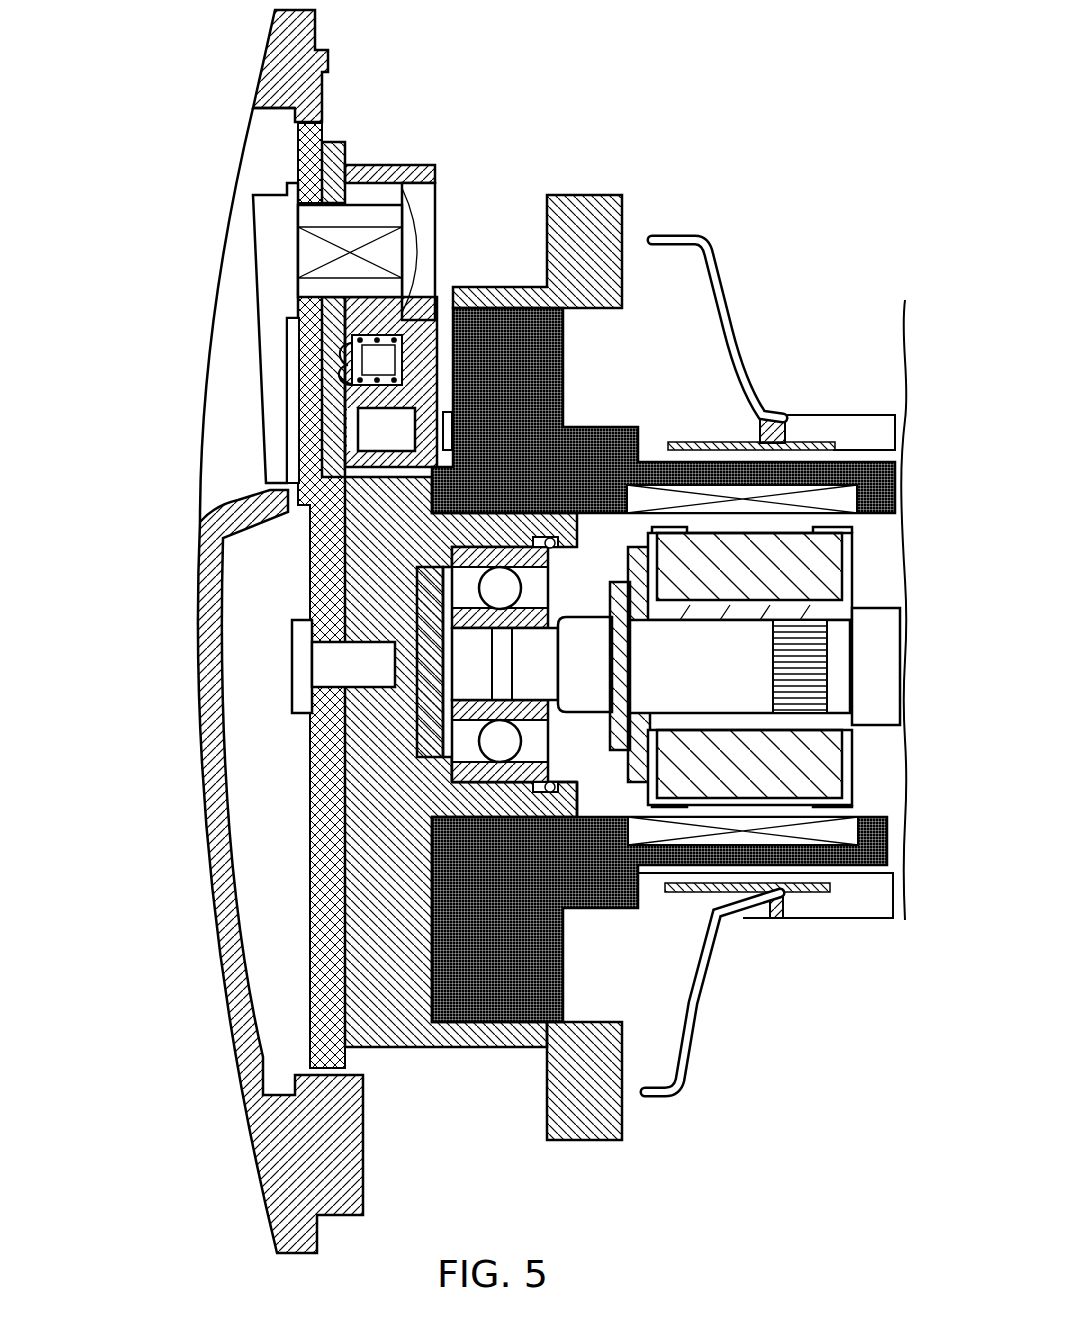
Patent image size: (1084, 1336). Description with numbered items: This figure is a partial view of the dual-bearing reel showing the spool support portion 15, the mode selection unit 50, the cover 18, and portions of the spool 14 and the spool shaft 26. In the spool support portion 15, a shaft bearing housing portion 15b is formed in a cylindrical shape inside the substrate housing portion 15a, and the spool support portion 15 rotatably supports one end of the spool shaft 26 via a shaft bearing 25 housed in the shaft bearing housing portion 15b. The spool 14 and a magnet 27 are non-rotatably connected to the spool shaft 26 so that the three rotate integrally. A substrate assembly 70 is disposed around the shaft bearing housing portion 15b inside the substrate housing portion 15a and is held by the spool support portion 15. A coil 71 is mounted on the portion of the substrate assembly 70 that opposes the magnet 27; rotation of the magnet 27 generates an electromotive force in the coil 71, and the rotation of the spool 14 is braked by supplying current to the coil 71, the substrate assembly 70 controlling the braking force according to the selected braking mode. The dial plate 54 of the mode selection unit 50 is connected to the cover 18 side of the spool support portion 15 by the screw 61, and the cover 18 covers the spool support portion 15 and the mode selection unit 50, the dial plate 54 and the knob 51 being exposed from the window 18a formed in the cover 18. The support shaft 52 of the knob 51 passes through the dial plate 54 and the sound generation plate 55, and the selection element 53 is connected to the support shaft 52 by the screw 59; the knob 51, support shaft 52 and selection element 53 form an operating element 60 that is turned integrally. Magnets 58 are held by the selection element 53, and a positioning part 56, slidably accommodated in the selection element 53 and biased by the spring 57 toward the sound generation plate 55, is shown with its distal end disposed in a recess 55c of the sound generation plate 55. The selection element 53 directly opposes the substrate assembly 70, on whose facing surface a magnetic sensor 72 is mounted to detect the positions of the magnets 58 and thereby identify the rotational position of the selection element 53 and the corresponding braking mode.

The spool 14 is at (713, 303).
The spool support portion 15 is at (570, 195).
The substrate housing portion 15a is at (447, 1047).
The shaft bearing housing portion 15b is at (495, 803).
The cover 18 is at (223, 960).
The window 18a is at (266, 110).
The shaft bearing 25 is at (523, 800).
The spool shaft 26 is at (868, 627).
The magnet 27 is at (785, 548).
The mode selection unit 50 is at (238, 197).
The knob 51 is at (278, 223).
The support shaft 52 is at (377, 215).
The selection element 53 is at (412, 162).
The dial plate 54 is at (300, 465).
The sound generation plate 55 is at (330, 367).
The recess 55c is at (347, 382).
The positioning part 56 is at (353, 343).
The spring 57 is at (347, 344).
The magnets 58 is at (377, 429).
The screw 59 is at (440, 300).
The operating element 60 is at (352, 25).
The screw 61 is at (293, 667).
The substrate assembly 70 is at (617, 427).
The coil 71 is at (750, 492).
The magnetic sensor 72 is at (445, 412).